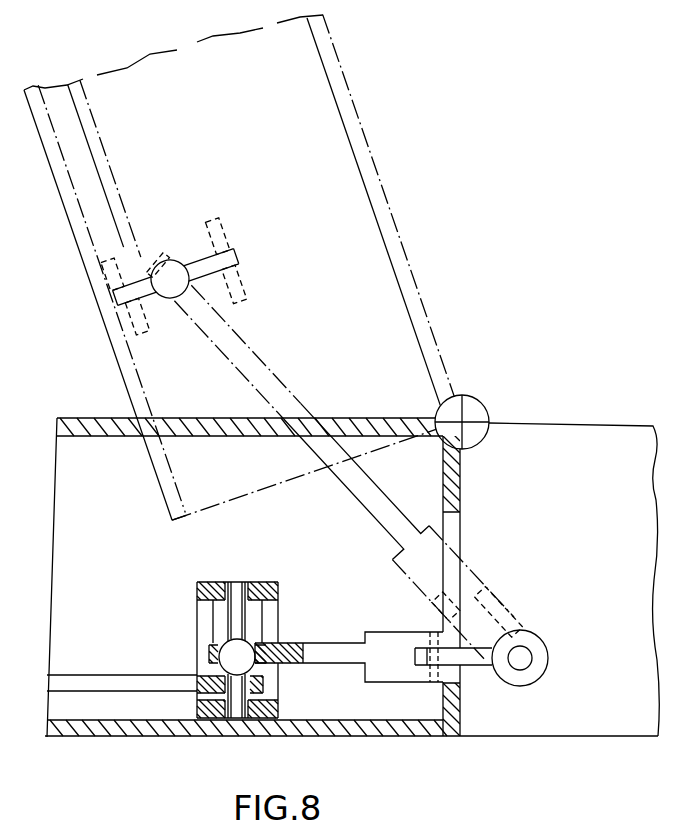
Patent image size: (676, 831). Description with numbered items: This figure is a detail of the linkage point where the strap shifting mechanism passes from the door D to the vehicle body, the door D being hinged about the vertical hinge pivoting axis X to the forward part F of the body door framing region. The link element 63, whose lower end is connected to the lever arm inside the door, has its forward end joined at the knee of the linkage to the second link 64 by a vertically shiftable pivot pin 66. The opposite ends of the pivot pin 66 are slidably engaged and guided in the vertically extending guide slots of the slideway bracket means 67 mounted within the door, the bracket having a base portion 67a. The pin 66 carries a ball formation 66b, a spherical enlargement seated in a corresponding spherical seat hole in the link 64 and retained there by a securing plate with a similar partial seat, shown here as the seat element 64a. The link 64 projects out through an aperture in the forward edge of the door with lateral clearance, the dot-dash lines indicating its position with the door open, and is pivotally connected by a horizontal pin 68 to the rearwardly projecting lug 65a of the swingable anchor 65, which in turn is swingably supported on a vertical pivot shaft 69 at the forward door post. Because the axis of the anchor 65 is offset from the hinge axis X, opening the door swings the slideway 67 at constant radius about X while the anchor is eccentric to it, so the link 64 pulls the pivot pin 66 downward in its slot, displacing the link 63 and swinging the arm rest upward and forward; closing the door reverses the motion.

The door D is at (101, 312).
The forward part of the vehicle body door framing region F is at (573, 426).
The door hinge pivoting axis X is at (470, 413).
The link element 63 is at (138, 693).
The second link 64 is at (346, 665).
The ball seat 64a is at (210, 648).
The swingable anchor 65 is at (541, 679).
The rearwardly projecting lug 65a is at (480, 668).
The vertically shiftable pivot pin 66 is at (237, 720).
The ball formation 66b is at (250, 641).
The slideway bracket means 67 is at (266, 584).
The housing base 67a is at (218, 733).
The horizontal pin 68 is at (408, 686).
The vertical pivot shaft 69 is at (529, 655).